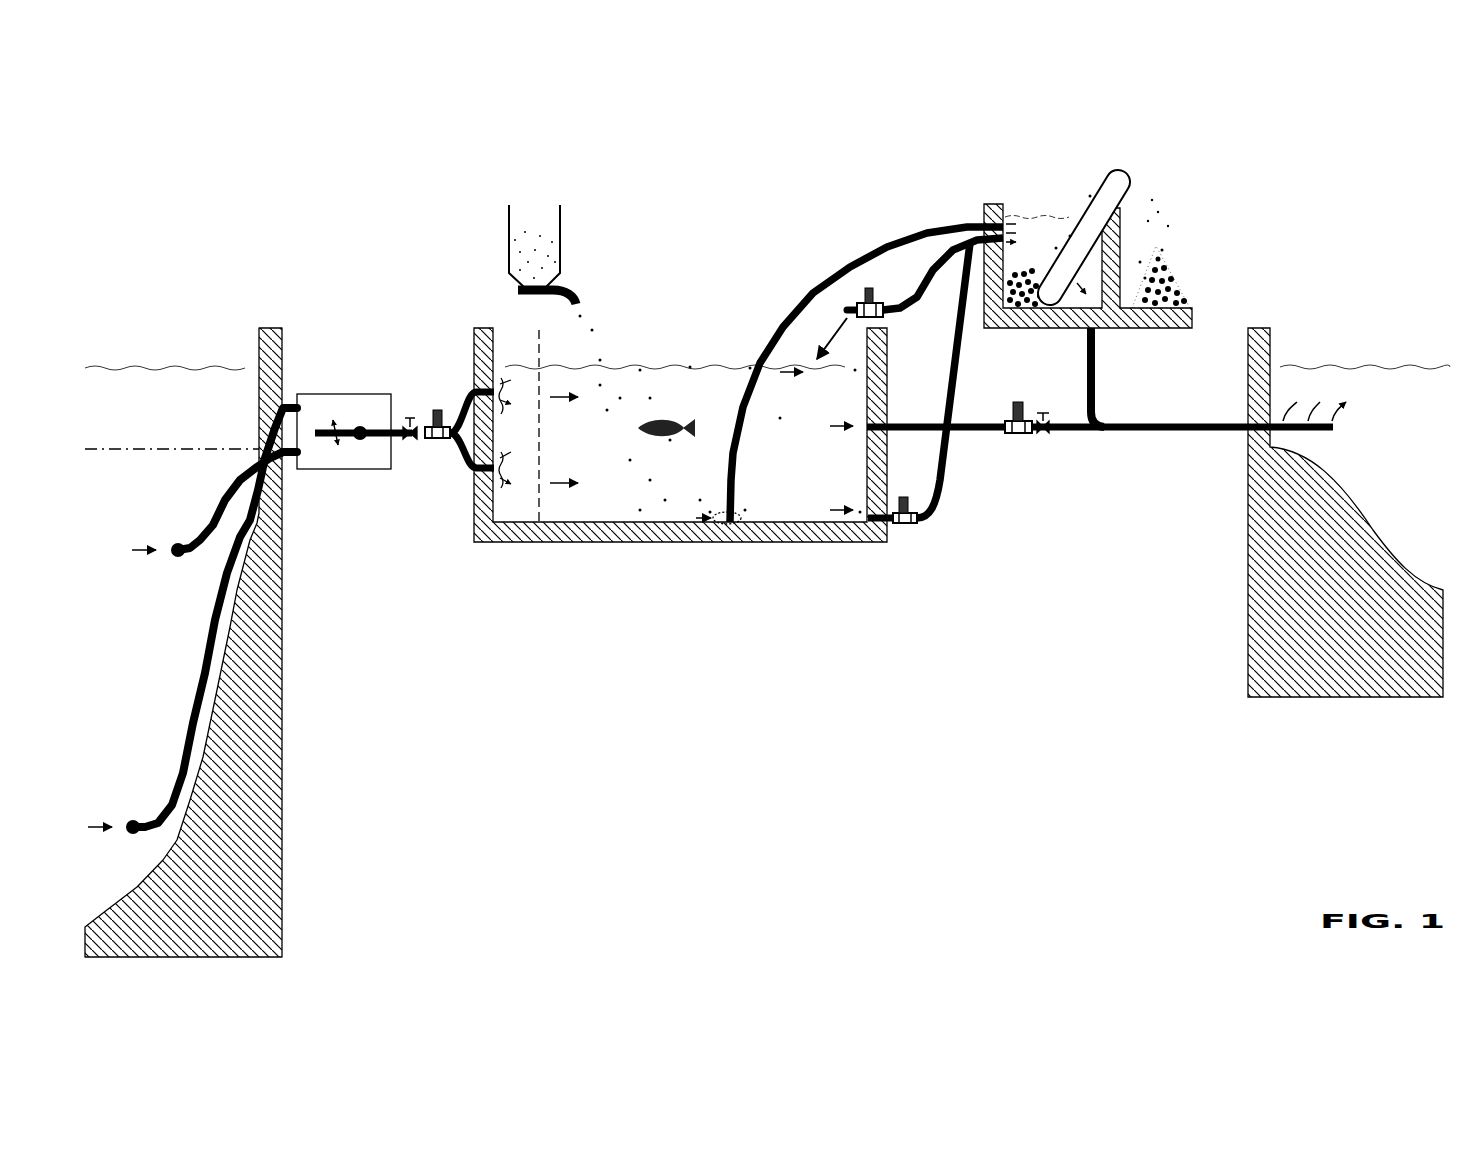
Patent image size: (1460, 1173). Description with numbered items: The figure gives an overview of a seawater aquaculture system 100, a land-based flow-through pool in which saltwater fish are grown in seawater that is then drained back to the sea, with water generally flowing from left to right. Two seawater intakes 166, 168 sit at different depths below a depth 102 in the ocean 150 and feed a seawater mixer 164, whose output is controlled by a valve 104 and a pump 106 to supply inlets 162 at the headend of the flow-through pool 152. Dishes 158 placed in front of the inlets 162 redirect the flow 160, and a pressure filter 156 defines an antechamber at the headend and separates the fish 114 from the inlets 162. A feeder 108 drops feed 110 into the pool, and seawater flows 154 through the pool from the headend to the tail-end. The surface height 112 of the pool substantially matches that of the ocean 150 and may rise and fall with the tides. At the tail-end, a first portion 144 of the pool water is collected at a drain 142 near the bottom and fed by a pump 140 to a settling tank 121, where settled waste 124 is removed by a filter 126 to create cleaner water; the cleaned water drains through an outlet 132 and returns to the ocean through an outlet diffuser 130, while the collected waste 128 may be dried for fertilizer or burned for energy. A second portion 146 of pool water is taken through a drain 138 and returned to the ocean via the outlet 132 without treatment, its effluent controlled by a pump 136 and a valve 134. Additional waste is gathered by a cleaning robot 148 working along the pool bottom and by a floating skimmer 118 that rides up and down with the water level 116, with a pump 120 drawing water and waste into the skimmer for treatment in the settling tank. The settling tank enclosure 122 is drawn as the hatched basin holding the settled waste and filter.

The seawater aquaculture system 100 is at (1445, 957).
The depth 102 is at (225, 449).
The valve 104 is at (409, 422).
The pump 106 is at (438, 409).
The feeder 108 is at (508, 250).
The feed 110 is at (585, 333).
The surface height 112 is at (628, 365).
The fish 114 is at (670, 423).
The water level 116 is at (735, 366).
The floating skimmer 118 is at (812, 362).
The pump 120 is at (870, 287).
The settling tank 121 is at (886, 379).
The settling tank 122 is at (1005, 224).
The settled waste 124 is at (1030, 270).
The filter 126 is at (1120, 180).
The collected waste 128 is at (1158, 244).
The outlet diffuser 130 is at (1305, 410).
The outlet 132 is at (1215, 432).
The valve 134 is at (1048, 434).
The pump 136 is at (1018, 435).
The drain 138 is at (888, 447).
The pump 140 is at (907, 527).
The drain 142 is at (870, 517).
The first portion 144 is at (850, 513).
The second portion 146 is at (845, 432).
The cleaning robot 148 is at (732, 523).
The ocean 150 is at (128, 368).
The flow-through pool 152 is at (683, 467).
The flow 154 is at (572, 485).
The pressure filter 156 is at (540, 505).
The dishes 158 is at (527, 523).
The flow 160 is at (505, 472).
The inlets 162 is at (473, 468).
The seawater mixer 164 is at (357, 455).
The seawater intake 166 is at (178, 540).
The seawater intake 168 is at (135, 818).